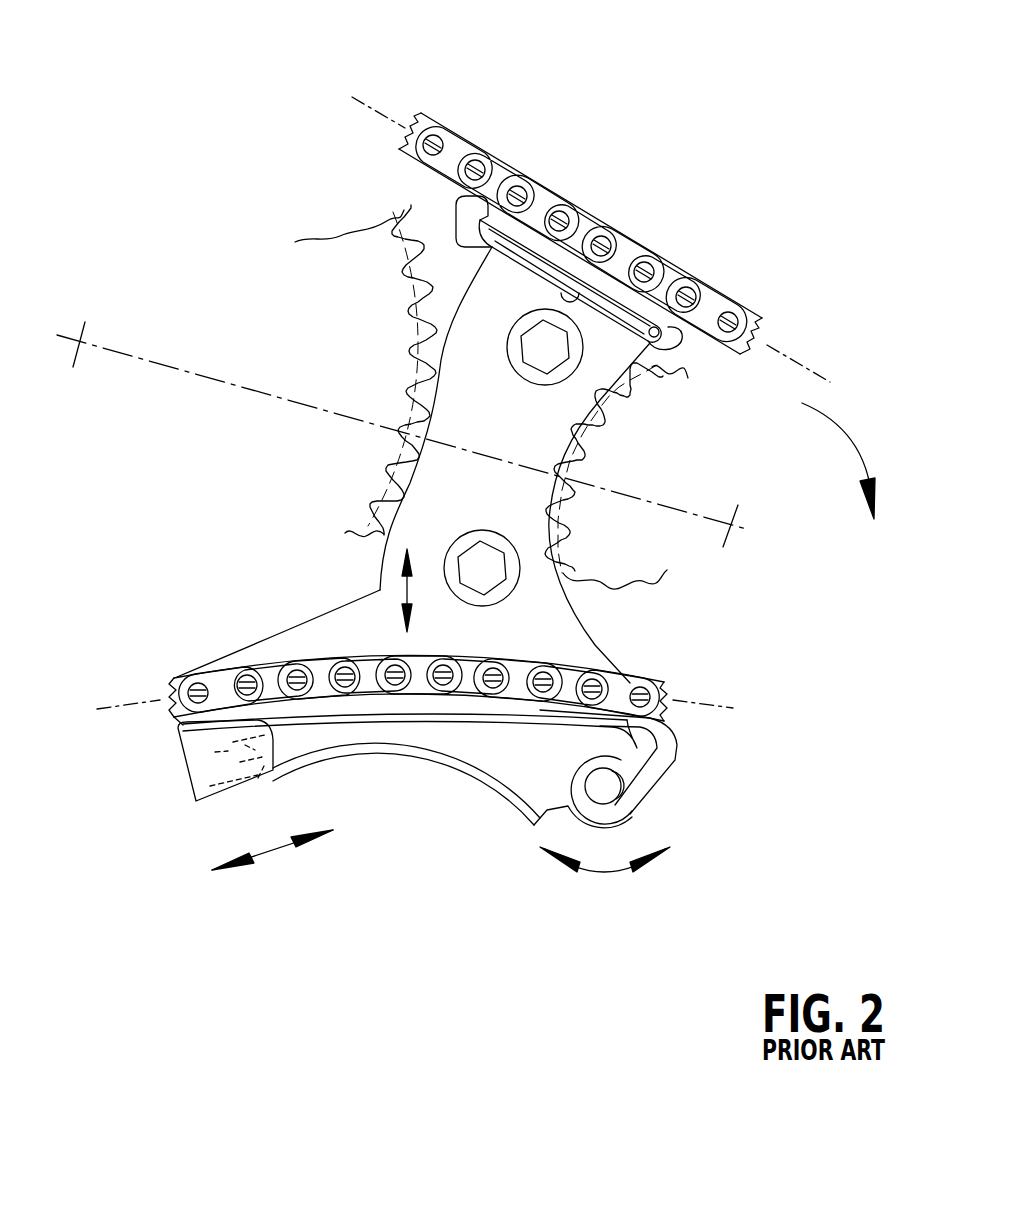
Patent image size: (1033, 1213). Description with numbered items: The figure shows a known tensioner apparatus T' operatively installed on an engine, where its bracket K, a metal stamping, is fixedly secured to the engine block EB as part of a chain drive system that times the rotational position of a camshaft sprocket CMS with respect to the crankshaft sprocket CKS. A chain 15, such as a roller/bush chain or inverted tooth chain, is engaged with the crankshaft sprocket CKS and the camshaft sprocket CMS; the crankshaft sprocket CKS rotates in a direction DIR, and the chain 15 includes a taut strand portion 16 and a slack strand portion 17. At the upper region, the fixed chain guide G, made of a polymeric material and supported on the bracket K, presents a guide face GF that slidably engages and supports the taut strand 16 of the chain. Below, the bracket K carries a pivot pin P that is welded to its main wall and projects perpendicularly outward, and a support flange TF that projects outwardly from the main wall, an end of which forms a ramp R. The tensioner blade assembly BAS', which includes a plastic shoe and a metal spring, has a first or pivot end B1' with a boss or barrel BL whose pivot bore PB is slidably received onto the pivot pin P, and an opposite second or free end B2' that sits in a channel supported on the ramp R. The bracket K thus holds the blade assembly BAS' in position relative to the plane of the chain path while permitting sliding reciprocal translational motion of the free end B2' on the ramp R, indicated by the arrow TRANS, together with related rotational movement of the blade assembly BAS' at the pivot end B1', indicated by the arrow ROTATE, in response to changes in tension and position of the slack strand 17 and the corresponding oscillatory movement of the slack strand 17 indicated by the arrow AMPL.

The chain 15 is at (443, 95).
The taut strand portion 16 is at (556, 182).
The slack strand portion 17 is at (267, 663).
The engine block EB is at (433, 223).
The camshaft sprocket CMS is at (357, 257).
The guide face GF is at (580, 198).
The fixed chain guide G is at (608, 287).
The bracket K is at (540, 442).
The oscillatory movement arrow AMPL is at (408, 590).
The crankshaft sprocket CKS is at (630, 567).
The direction of rotation DIR is at (837, 428).
The tensioner blade assembly BAS' is at (402, 768).
The tensioner apparatus T' is at (410, 788).
The support flange TF is at (475, 778).
The boss or barrel BL is at (570, 772).
The pivot pin P is at (605, 790).
The pivot bore PB is at (618, 790).
The pivot end B1' is at (654, 762).
The free end B2' is at (254, 767).
The ramp R is at (183, 768).
The translational motion arrow TRANS is at (273, 850).
The rotational movement arrow ROTATE is at (603, 874).